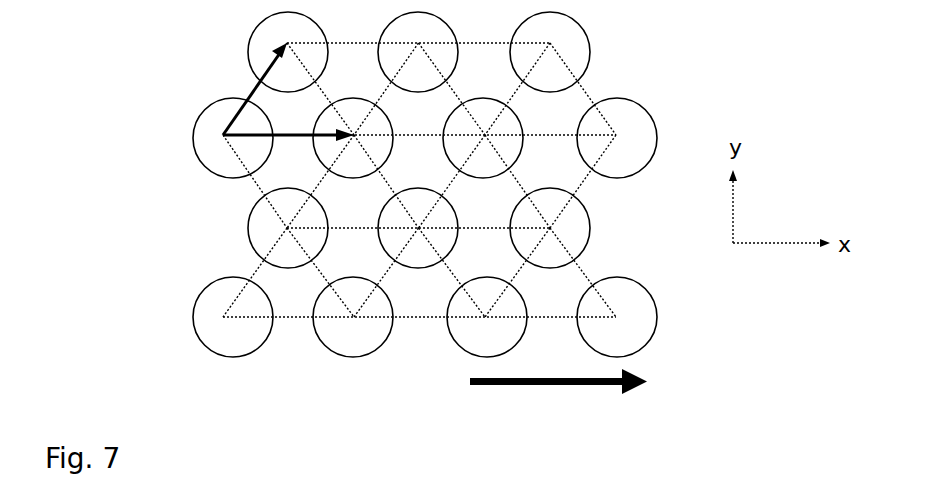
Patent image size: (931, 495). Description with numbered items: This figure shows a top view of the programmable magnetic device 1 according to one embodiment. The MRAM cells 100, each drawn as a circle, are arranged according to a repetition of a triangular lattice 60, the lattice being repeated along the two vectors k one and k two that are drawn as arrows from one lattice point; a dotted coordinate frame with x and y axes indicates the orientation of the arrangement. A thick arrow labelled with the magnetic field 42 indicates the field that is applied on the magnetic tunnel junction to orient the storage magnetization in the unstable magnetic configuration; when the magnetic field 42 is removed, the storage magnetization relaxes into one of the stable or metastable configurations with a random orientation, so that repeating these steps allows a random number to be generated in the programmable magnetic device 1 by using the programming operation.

The programmable magnetic device 1 is at (78, 58).
The triangular lattice 60 is at (250, 263).
The MRAM cell 100 is at (607, 56).
The magnetic field 42 is at (558, 397).